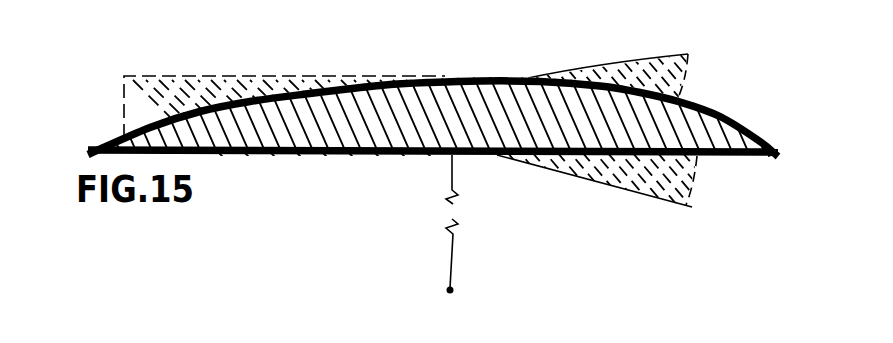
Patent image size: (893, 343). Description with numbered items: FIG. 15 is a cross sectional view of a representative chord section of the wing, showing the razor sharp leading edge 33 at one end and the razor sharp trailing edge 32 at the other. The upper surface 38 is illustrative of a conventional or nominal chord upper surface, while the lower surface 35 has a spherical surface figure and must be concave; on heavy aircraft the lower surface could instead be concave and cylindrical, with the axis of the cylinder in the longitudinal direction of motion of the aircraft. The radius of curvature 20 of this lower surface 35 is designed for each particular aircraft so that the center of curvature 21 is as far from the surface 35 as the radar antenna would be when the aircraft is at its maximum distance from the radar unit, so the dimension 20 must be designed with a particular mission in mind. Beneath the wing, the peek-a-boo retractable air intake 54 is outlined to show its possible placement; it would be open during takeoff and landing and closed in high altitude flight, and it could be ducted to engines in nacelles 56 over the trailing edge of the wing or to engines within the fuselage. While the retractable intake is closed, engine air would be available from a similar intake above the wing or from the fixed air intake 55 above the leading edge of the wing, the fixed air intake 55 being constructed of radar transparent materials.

The radius of curvature 20 is at (460, 162).
The center of curvature 21 is at (448, 288).
The razor sharp trailing edge 32 is at (87, 149).
The razor sharp leading edge 33 is at (780, 151).
The lower surface 35 is at (397, 158).
The upper surface 38 is at (475, 78).
The peek-a-boo retractable air intake 54 is at (655, 198).
The fixed air intake 55 is at (608, 63).
The nacelles 56 is at (164, 95).